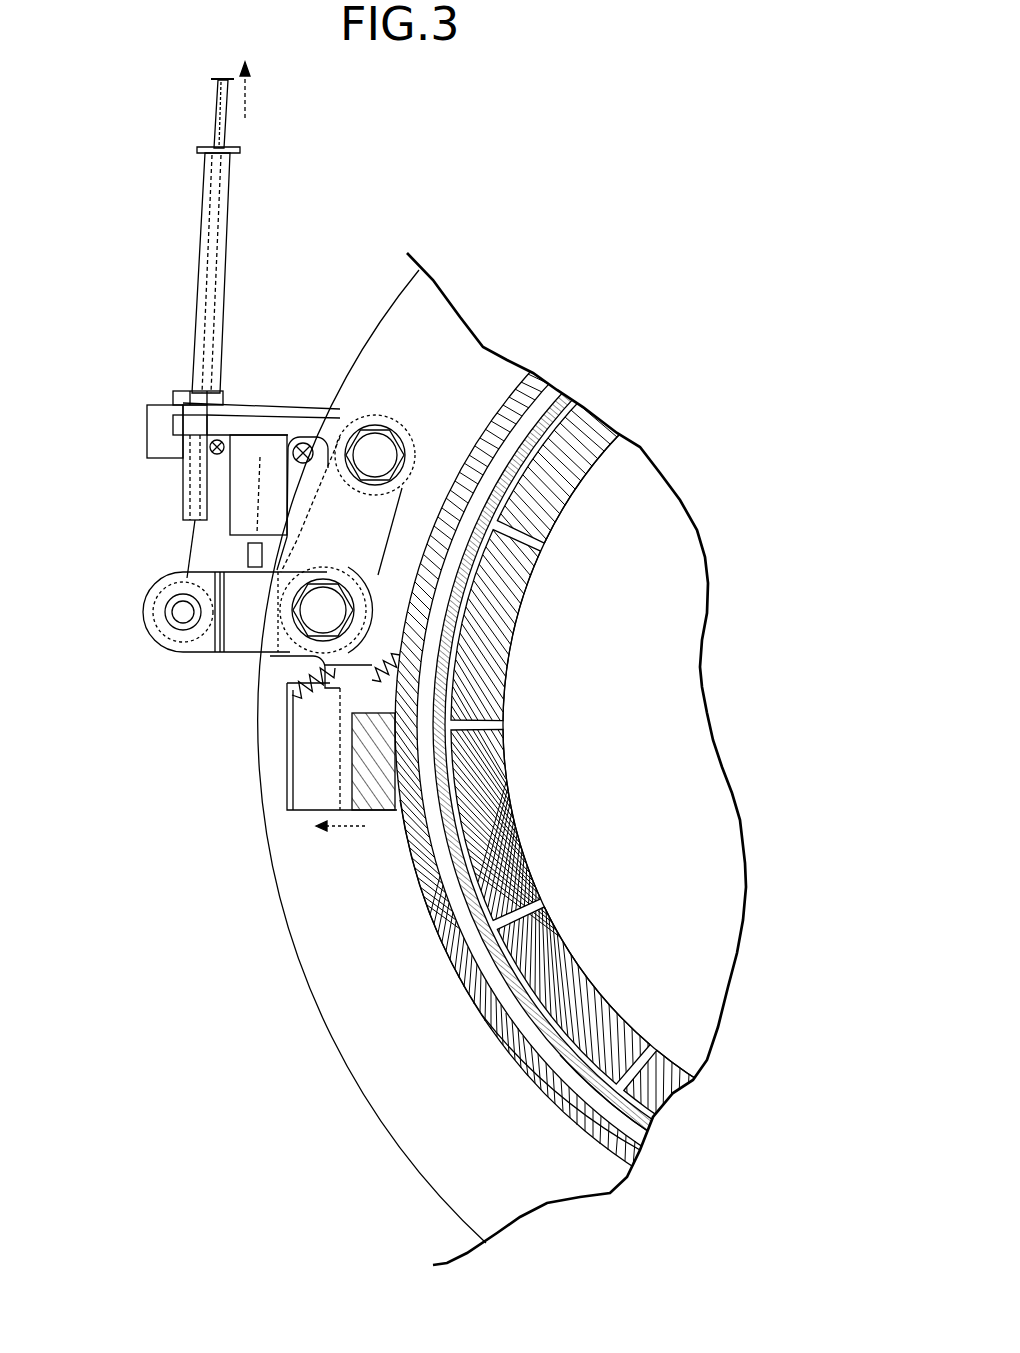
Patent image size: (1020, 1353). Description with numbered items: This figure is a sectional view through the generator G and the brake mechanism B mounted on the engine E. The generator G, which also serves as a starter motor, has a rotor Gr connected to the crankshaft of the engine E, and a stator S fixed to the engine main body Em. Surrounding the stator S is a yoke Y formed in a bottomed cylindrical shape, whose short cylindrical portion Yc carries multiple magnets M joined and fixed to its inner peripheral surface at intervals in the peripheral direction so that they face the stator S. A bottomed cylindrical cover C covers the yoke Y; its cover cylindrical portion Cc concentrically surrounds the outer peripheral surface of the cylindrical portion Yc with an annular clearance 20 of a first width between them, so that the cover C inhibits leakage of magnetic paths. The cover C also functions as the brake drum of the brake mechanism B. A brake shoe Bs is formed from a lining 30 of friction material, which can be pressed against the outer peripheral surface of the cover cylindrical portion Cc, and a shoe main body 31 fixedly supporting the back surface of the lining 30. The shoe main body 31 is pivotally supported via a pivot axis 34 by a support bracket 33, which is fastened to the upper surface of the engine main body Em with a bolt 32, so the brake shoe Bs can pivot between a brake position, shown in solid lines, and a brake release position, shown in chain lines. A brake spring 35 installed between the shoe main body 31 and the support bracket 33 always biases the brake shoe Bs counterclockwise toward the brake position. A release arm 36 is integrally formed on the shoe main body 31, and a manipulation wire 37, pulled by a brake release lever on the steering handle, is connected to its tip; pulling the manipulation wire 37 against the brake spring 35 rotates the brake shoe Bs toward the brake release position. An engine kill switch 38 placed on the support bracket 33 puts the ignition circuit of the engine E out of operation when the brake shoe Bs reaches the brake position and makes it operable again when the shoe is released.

The annular clearance 20 is at (433, 773).
The lining 30 is at (373, 815).
The shoe main body 31 is at (306, 812).
The bolt 32 is at (373, 438).
The support bracket 33 is at (342, 508).
The pivot axis 34 is at (323, 603).
The brake spring 35 is at (287, 700).
The release arm 36 is at (195, 658).
The manipulation wire 37 is at (210, 115).
The engine kill switch 38 is at (257, 483).
The cover C is at (513, 390).
The cover cylindrical portion Cc is at (518, 1063).
The stator S is at (590, 453).
The yoke Y is at (570, 744).
The cylindrical portion Yc is at (590, 1100).
The magnets M is at (510, 873).
The generator G is at (487, 407).
The rotor Gr is at (476, 1016).
The brake mechanism B is at (263, 506).
The brake shoe Bs is at (345, 817).
The engine E is at (397, 1177).
The engine main body Em is at (363, 1027).